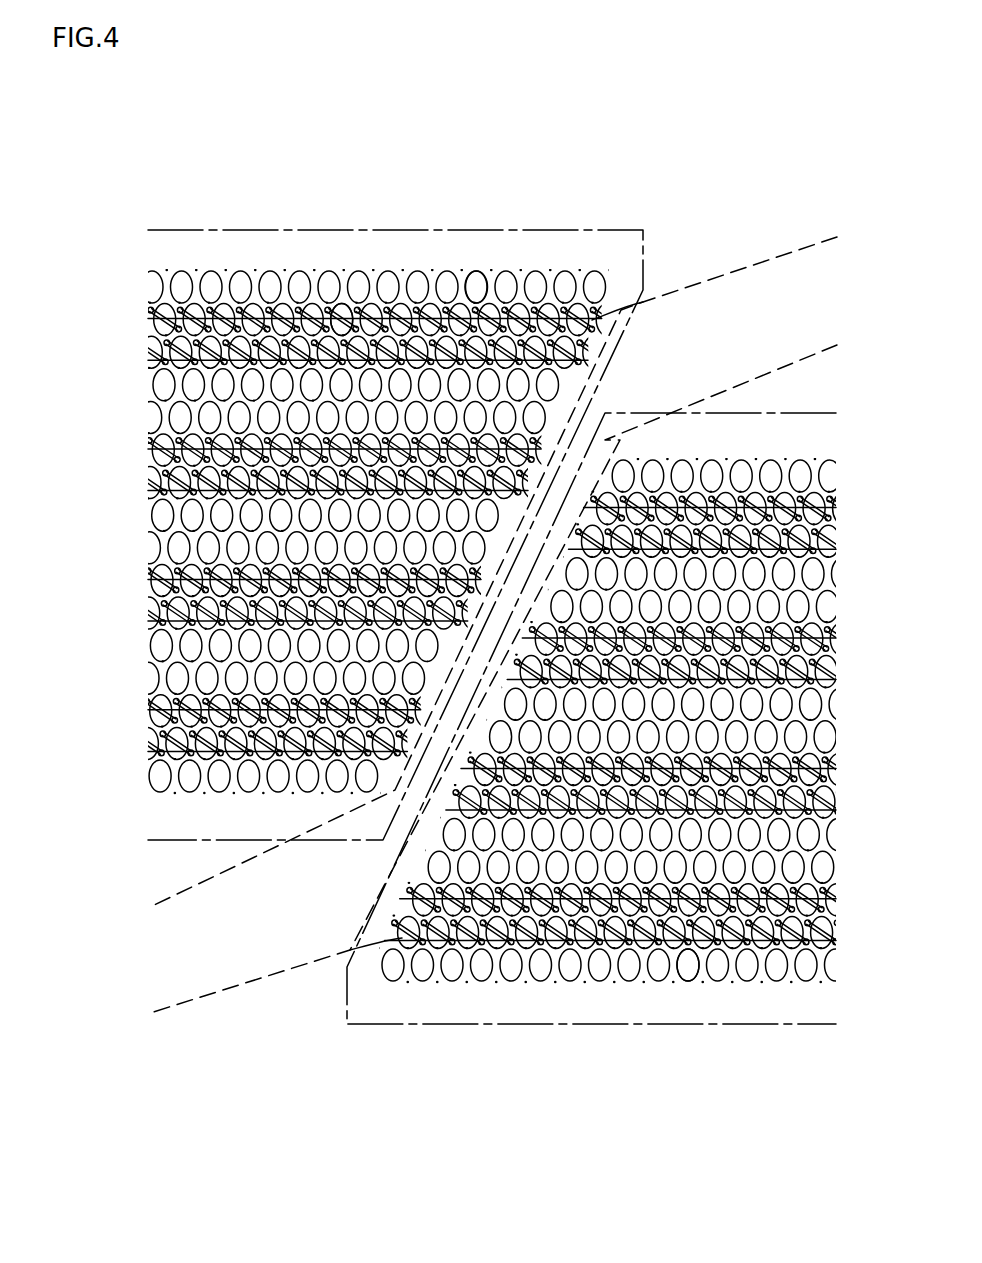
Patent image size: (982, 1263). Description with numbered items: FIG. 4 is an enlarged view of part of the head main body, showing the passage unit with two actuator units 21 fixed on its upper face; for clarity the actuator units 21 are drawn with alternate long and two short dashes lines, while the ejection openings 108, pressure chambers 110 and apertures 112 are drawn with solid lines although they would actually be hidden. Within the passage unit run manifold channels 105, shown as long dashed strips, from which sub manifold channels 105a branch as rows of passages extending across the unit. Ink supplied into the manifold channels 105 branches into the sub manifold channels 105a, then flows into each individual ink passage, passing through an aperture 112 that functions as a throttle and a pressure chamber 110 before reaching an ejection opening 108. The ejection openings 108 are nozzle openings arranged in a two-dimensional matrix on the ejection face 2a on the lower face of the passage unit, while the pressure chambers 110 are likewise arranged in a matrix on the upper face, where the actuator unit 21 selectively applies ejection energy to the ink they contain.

The ejection face 2a is at (745, 150).
The actuator unit 21 is at (613, 230).
The manifold channel 105 is at (722, 286).
The sub manifold channel 105a is at (331, 527).
The ejection opening 108 is at (557, 632).
The pressure chamber 110 is at (467, 287).
The aperture 112 is at (656, 633).